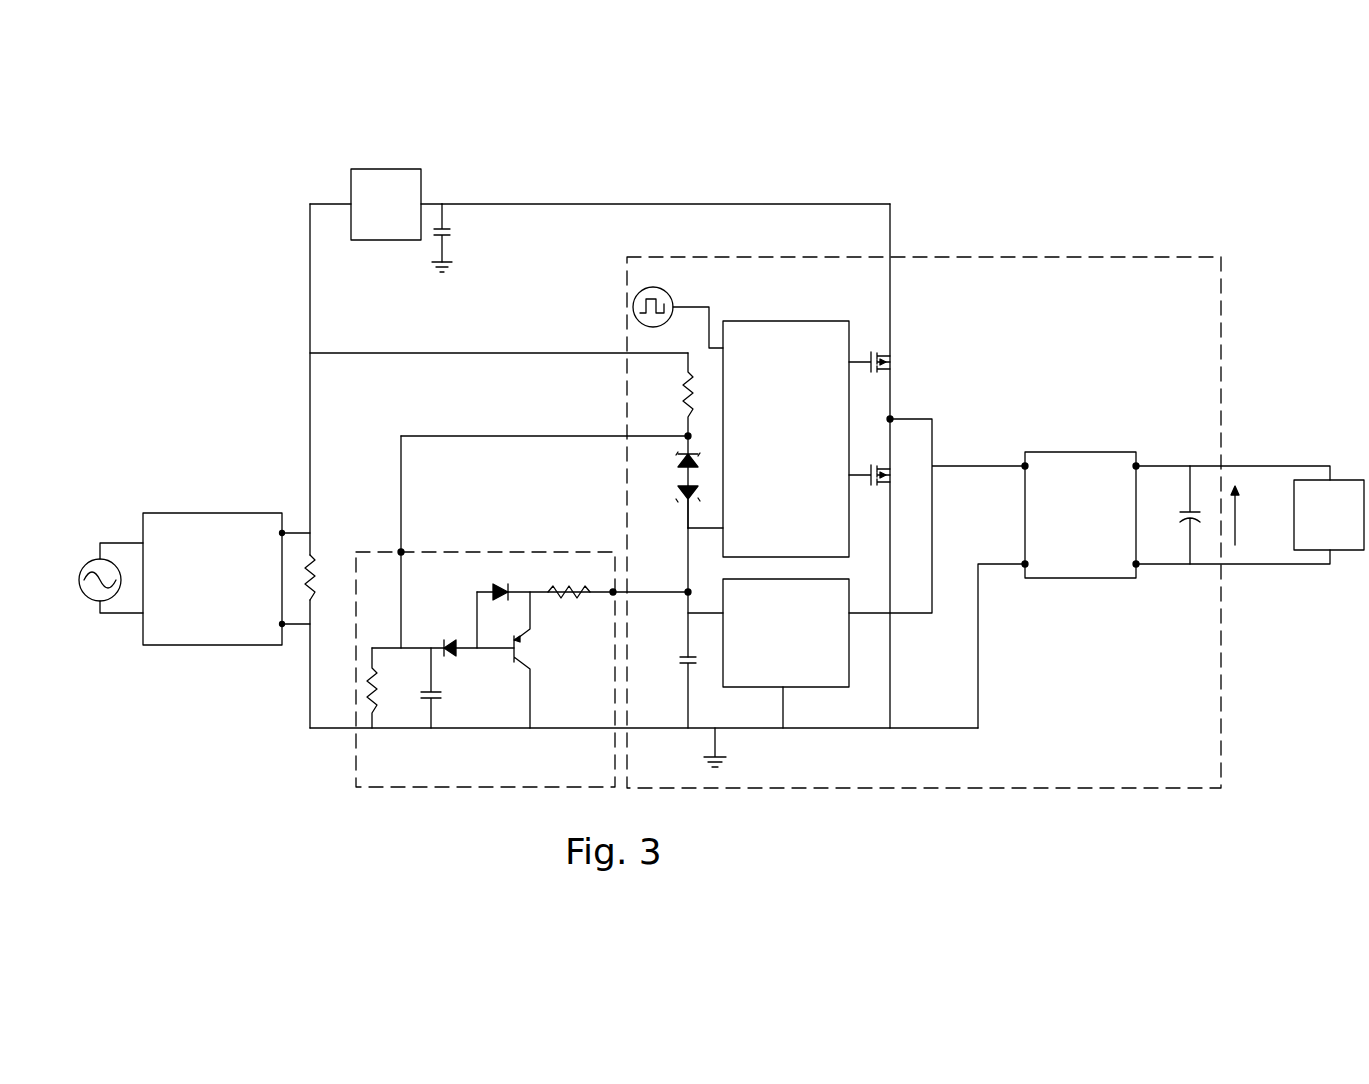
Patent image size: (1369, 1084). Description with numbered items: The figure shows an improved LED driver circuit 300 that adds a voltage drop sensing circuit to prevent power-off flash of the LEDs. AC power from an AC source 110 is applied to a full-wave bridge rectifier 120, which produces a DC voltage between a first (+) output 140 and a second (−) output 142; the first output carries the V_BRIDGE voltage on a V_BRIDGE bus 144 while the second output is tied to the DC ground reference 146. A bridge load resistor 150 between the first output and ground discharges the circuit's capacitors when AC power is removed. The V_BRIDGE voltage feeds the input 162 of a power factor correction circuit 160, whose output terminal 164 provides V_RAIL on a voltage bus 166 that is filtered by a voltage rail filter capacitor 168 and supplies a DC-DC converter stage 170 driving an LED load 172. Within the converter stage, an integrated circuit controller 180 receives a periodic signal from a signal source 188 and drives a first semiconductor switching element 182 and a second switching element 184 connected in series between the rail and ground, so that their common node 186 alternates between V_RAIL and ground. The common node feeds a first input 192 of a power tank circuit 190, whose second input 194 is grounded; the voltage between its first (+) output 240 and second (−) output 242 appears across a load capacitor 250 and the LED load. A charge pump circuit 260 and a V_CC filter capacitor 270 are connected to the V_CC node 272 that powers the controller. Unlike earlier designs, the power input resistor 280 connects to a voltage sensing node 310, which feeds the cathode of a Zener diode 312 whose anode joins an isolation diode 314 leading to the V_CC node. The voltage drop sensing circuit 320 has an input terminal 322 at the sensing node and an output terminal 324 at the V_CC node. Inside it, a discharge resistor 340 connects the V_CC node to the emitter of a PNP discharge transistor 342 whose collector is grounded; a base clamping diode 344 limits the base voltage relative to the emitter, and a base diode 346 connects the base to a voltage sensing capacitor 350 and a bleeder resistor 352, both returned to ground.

The AC source 110 is at (88, 566).
The full-wave bridge rectifier 120 is at (212, 579).
The first (+) output 140 is at (285, 530).
The second (−) output 142 is at (285, 627).
The V_BRIDGE bus 144 is at (338, 312).
The DC ground reference 146 is at (436, 262).
The bridge load resistor 150 is at (313, 572).
The power factor correction (PFC) circuit 160 is at (410, 168).
The input 162 is at (345, 203).
The output terminal 164 is at (426, 203).
The voltage bus 166 is at (582, 208).
The voltage rail filter capacitor 168 is at (446, 230).
The DC-DC converter stage 170 is at (924, 522).
The LED load 172 is at (1348, 554).
The integrated circuit controller 180 is at (768, 439).
The first semiconductor switching element 182 is at (884, 372).
The second switching element 184 is at (884, 485).
The common node 186 is at (892, 418).
The signal source 188 is at (648, 324).
The power tank circuit 190 is at (1080, 515).
The first input 192 is at (1023, 465).
The second input 194 is at (1023, 566).
The first (+) output 240 is at (1138, 465).
The second (−) output 242 is at (1138, 566).
The load capacitor 250 is at (1186, 516).
The charge pump circuit 260 is at (768, 653).
The V_CC filter capacitor 270 is at (686, 664).
The V_CC node 272 is at (686, 595).
The power input resistor 280 is at (664, 394).
The LED driver circuit 300 is at (1262, 232).
The voltage sensing node 310 is at (685, 434).
The Zener diode 312 is at (684, 458).
The isolation diode 314 is at (684, 503).
The voltage drop sensing circuit 320 is at (485, 669).
The input terminal 322 is at (403, 556).
The output terminal 324 is at (610, 594).
The discharge resistor 340 is at (580, 588).
The discharge transistor 342 is at (512, 643).
The base clamping diode 344 is at (503, 585).
The base diode 346 is at (449, 642).
The voltage sensing capacitor 350 is at (433, 699).
The bleeder resistor 352 is at (378, 692).